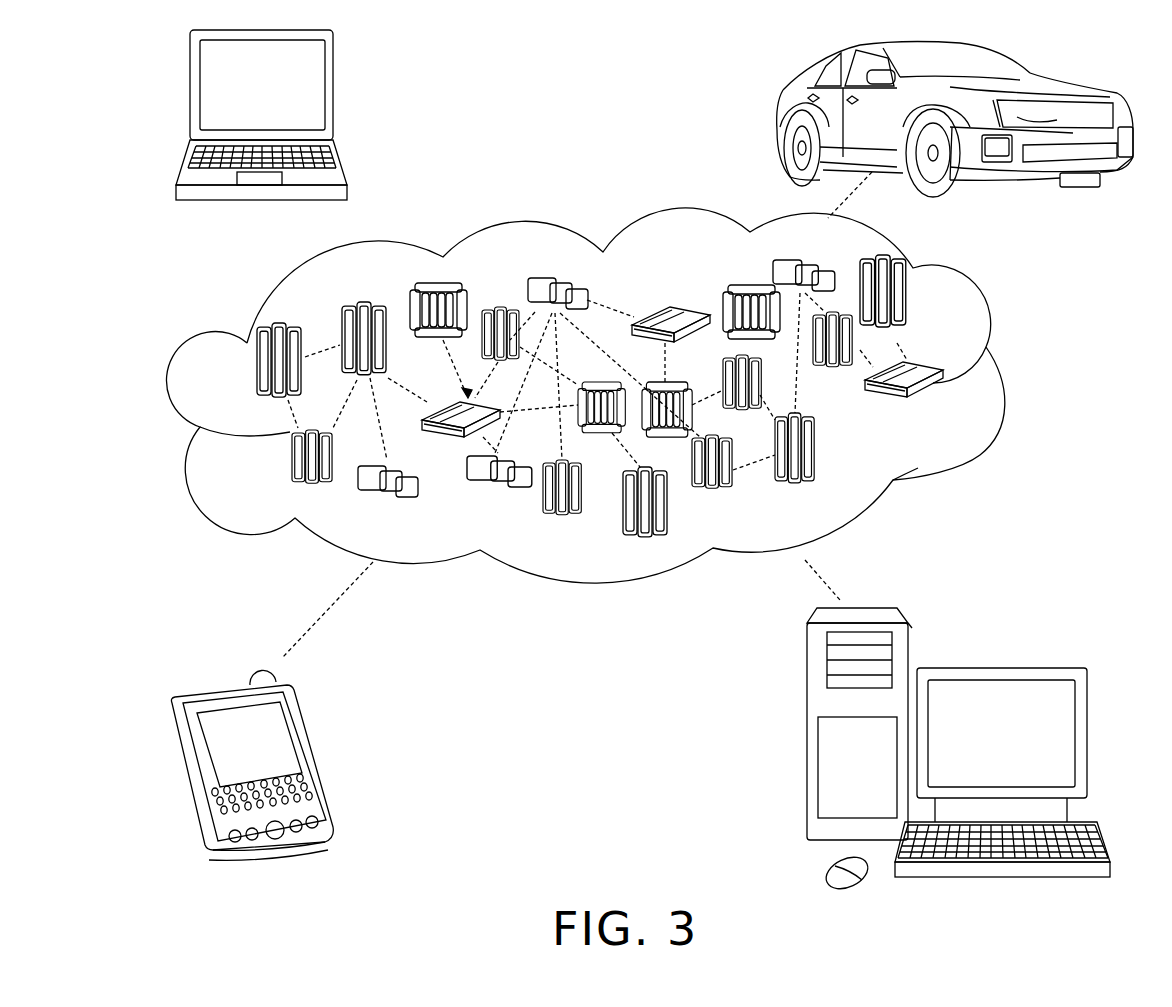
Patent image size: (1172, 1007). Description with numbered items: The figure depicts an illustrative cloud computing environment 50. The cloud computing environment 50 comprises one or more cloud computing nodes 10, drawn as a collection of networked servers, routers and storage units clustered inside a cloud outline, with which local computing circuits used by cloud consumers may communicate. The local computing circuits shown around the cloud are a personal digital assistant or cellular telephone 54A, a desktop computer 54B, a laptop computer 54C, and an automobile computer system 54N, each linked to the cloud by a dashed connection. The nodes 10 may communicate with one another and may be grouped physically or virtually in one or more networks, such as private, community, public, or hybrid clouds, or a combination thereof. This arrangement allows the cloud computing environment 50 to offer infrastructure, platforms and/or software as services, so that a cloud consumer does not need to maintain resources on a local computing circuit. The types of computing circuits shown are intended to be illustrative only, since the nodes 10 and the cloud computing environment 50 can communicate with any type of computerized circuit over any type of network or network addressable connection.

The laptop computer 54C is at (337, 94).
The automobile computer system 54N is at (782, 112).
The personal digital assistant (PDA) or cellular telephone 54A is at (313, 757).
The desktop computer 54B is at (1000, 668).
The cloud computing environment 50 is at (615, 395).
The cloud computing node 10 is at (948, 409).